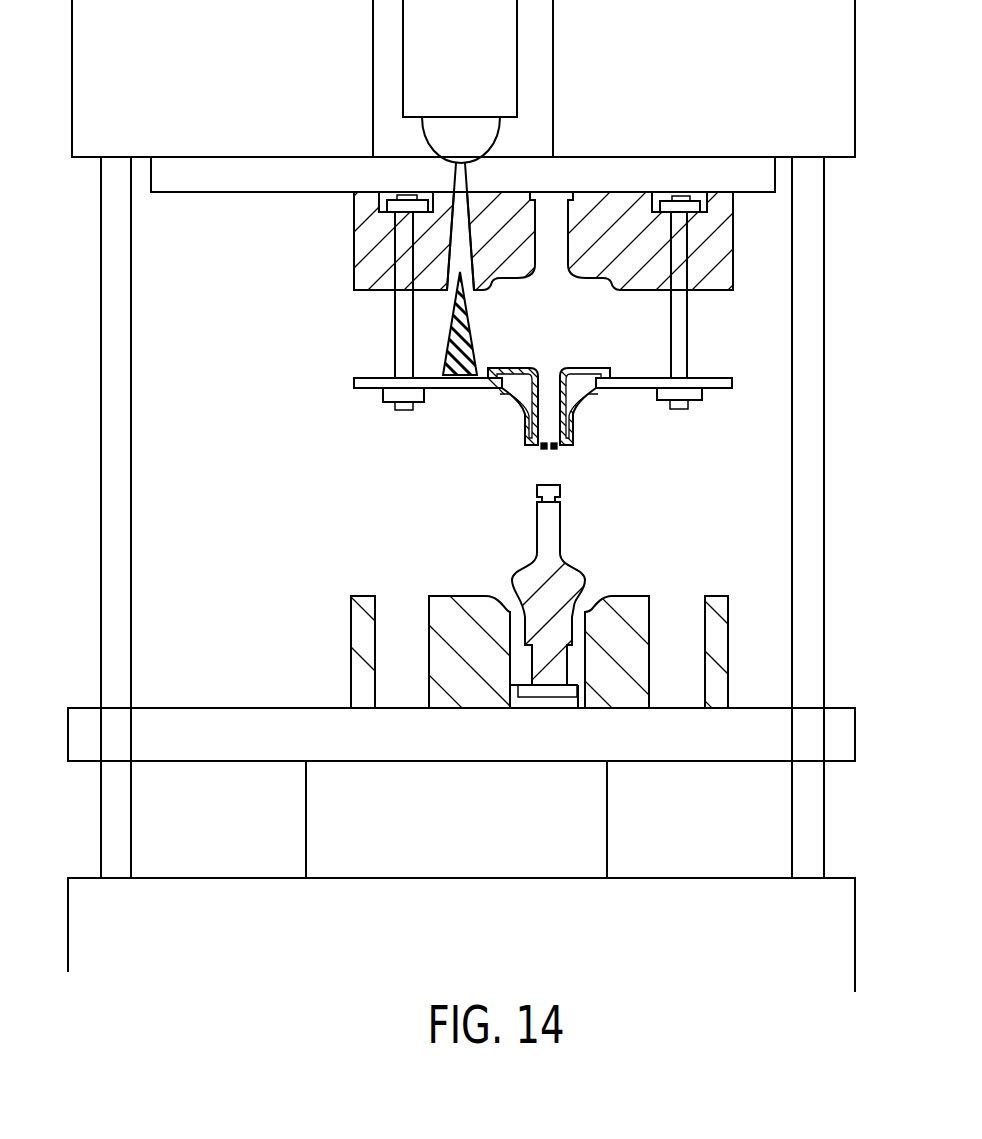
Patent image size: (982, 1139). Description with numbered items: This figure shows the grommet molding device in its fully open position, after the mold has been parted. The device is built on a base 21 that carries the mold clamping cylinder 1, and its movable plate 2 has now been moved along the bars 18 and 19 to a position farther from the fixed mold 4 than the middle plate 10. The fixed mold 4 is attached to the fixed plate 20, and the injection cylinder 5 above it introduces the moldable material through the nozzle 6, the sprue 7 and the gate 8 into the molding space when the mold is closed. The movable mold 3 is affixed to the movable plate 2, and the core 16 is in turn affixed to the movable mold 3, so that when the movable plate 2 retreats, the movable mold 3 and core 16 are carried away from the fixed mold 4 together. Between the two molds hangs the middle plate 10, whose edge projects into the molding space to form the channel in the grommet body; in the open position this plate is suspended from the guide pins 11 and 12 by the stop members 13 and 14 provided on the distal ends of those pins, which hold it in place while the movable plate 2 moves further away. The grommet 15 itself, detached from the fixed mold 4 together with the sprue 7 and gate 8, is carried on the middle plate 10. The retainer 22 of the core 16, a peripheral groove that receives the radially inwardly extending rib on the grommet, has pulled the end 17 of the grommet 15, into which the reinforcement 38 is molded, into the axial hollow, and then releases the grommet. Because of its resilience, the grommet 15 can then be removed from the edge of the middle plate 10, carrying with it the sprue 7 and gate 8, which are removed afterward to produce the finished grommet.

The mold clamping cylinder 1 is at (595, 843).
The movable plate 2 is at (847, 737).
The movable mold 3 is at (630, 657).
The fixed mold 4 is at (722, 258).
The injection cylinder 5 is at (451, 69).
The nozzle 6 is at (440, 133).
The sprue 7 is at (455, 345).
The gate 8 is at (480, 387).
The middle plate 10 is at (728, 382).
The guide pin 11 is at (678, 327).
The guide pin 12 is at (402, 352).
The stop member 13 is at (692, 393).
The stop member 14 is at (388, 395).
The grommet 15 is at (593, 403).
The core 16 is at (572, 590).
The end 17 is at (563, 452).
The bar 18 is at (818, 820).
The bar 19 is at (97, 802).
The fixed plate 20 is at (758, 177).
The base 21 is at (832, 957).
The retainer 22 is at (562, 492).
The reinforcement 38 is at (545, 450).